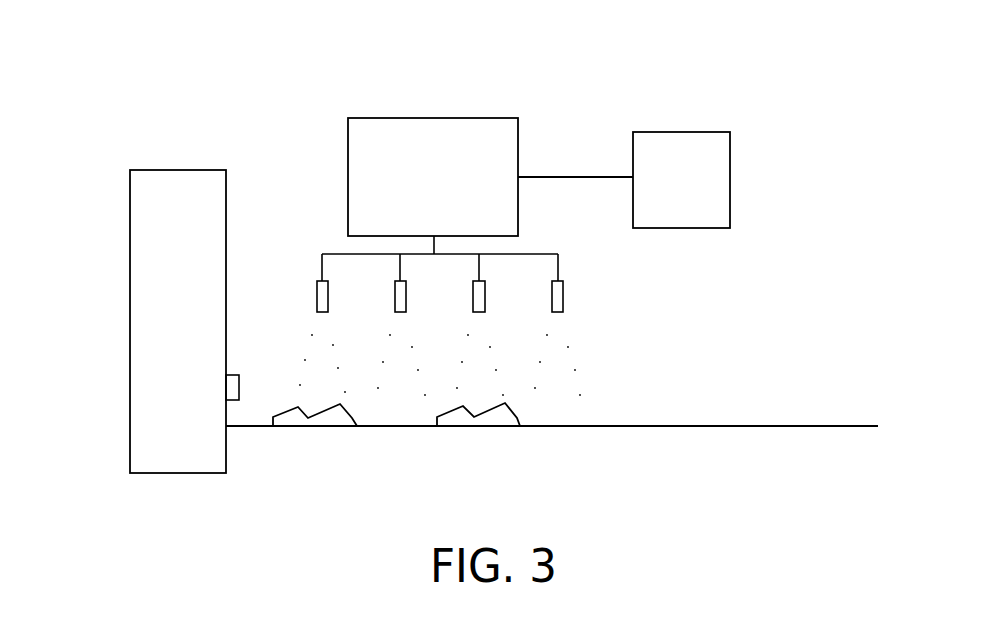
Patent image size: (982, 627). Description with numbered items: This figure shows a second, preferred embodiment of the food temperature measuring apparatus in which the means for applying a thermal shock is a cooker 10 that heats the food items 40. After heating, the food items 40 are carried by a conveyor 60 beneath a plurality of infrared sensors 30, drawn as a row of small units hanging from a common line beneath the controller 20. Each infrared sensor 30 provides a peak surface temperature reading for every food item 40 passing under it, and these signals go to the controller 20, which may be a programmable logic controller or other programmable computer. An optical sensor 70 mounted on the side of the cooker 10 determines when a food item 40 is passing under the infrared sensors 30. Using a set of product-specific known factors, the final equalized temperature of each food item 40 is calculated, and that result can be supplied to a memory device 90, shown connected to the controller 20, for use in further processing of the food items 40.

The cooker 10 is at (130, 318).
The controller 20 is at (518, 162).
The infrared sensors 30 is at (317, 295).
The food items 40 is at (338, 418).
The conveyor 60 is at (742, 426).
The optical sensors 70 is at (239, 385).
The memory device 90 is at (730, 165).